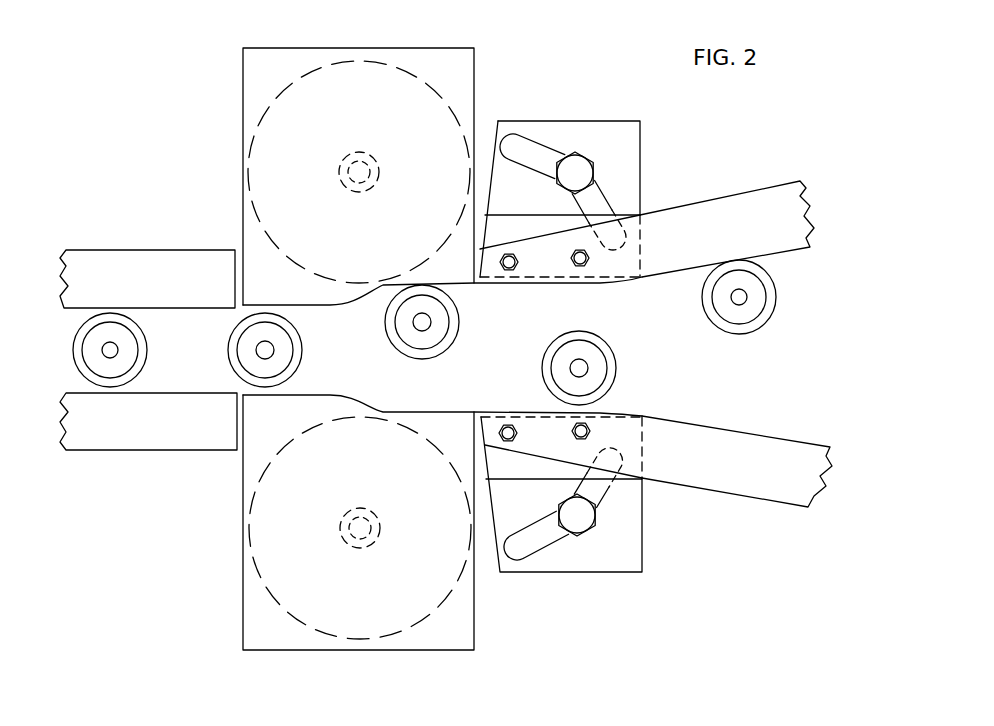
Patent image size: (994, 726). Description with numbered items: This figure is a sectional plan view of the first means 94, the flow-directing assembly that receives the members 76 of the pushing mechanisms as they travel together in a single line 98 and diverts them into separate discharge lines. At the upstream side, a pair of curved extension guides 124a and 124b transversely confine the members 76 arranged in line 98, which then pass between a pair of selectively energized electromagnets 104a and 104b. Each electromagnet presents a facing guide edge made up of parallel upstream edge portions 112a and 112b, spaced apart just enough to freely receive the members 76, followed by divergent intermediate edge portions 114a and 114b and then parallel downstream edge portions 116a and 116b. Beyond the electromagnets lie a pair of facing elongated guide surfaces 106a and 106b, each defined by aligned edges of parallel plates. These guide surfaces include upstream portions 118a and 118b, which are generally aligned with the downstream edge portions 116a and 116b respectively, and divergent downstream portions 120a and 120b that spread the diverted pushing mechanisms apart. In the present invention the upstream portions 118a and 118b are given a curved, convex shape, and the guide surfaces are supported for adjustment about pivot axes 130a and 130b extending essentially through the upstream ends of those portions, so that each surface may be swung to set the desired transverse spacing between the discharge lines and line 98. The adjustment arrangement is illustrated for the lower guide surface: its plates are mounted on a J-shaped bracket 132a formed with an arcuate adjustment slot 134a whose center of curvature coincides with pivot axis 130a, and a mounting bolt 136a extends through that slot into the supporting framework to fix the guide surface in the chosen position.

The members of pushing mechanisms 76 is at (226, 351).
The first means 94 is at (167, 510).
The line 98 is at (68, 348).
The electromagnet 104a is at (241, 603).
The electromagnet 104b is at (240, 87).
The elongated guide surface 106a is at (779, 435).
The elongated guide surface 106b is at (799, 252).
The upstream edge portion 112a is at (302, 385).
The upstream edge portion 112b is at (304, 303).
The intermediate edge portion 114a is at (380, 400).
The intermediate edge portion 114b is at (366, 298).
The downstream edge portion 116a is at (443, 405).
The downstream edge portion 116b is at (456, 286).
The upstream portion 118a is at (530, 410).
The upstream portion 118b is at (530, 283).
The downstream portion 120a is at (742, 424).
The downstream portion 120b is at (690, 273).
The curved extension guide 124a is at (122, 450).
The curved extension guide 124b is at (110, 250).
The pivot axis 130a is at (474, 412).
The pivot axis 130b is at (484, 298).
The J-shaped bracket 132a is at (645, 522).
The arcuate adjustment slot 134a is at (542, 546).
The mounting bolt 136a is at (585, 520).